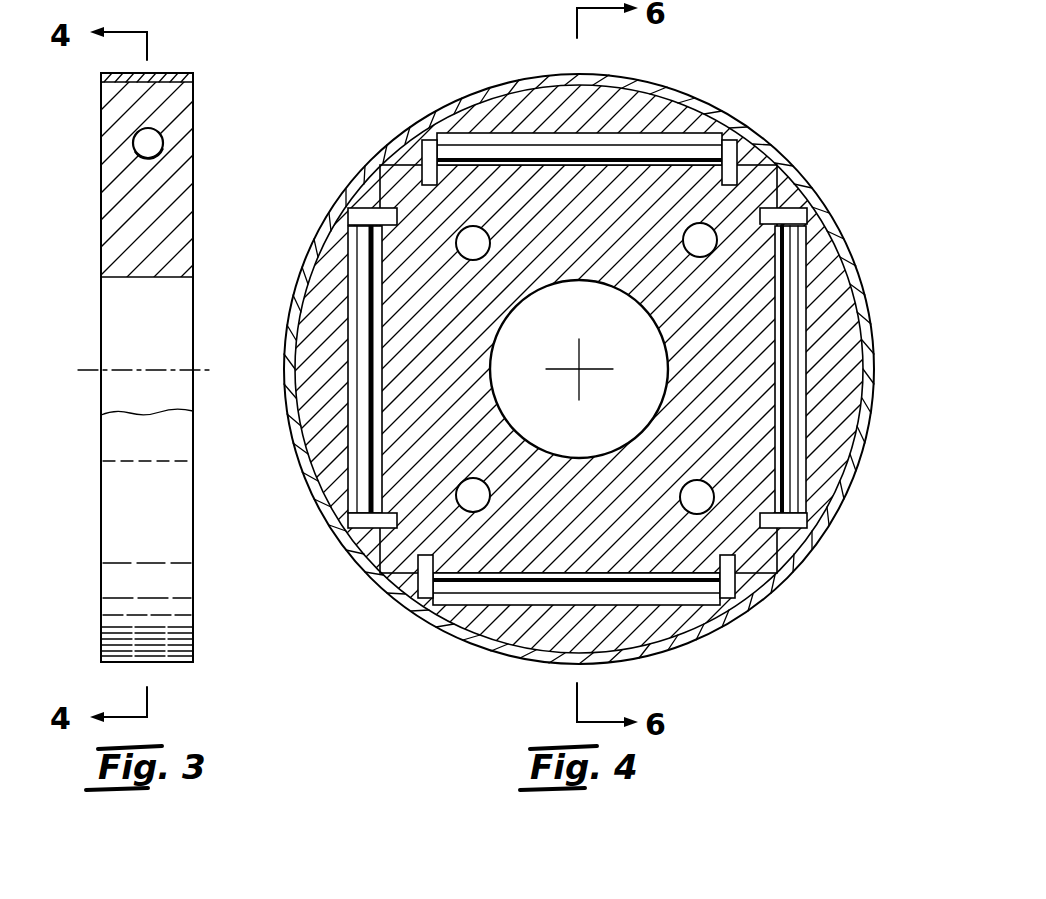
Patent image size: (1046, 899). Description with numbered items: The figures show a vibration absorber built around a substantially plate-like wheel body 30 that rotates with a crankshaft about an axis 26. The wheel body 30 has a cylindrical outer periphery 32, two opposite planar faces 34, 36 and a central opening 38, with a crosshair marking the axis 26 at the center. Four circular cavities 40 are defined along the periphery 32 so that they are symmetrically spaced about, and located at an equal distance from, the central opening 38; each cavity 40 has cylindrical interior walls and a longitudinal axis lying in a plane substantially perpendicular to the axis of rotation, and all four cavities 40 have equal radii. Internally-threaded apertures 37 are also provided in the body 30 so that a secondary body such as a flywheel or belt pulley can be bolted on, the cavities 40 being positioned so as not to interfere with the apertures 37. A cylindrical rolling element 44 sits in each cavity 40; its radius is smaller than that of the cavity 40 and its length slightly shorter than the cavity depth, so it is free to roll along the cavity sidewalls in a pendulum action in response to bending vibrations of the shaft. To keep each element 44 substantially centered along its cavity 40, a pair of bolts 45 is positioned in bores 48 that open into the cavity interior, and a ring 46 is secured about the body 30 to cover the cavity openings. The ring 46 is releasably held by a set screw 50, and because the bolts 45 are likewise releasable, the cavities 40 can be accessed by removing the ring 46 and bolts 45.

In FIG. 4, the axis 26 is at (581, 372).
In FIG. 3, the wheel body 30 is at (196, 96).
In FIG. 4, the cylindrical outer periphery 32 is at (292, 325).
In FIG. 3, the planar face 34 is at (100, 220).
In FIG. 3, the planar face 36 is at (194, 225).
In FIG. 4, the internally-threaded apertures 37 is at (484, 238).
In FIG. 4, the central opening 38 is at (641, 308).
In FIG. 3, the circular cavities 40 is at (165, 153).
In FIG. 4, the circular cavities 40 is at (362, 431).
In FIG. 3, the cylindrical rolling elements 44 is at (140, 143).
In FIG. 4, the cylindrical rolling elements 44 is at (416, 140).
In FIG. 4, the bolts 45 is at (418, 158).
In FIG. 3, the ring 46 is at (181, 72).
In FIG. 4, the ring 46 is at (856, 262).
In FIG. 4, the bores 48 is at (426, 170).
In FIG. 4, the set screw 50 is at (690, 102).